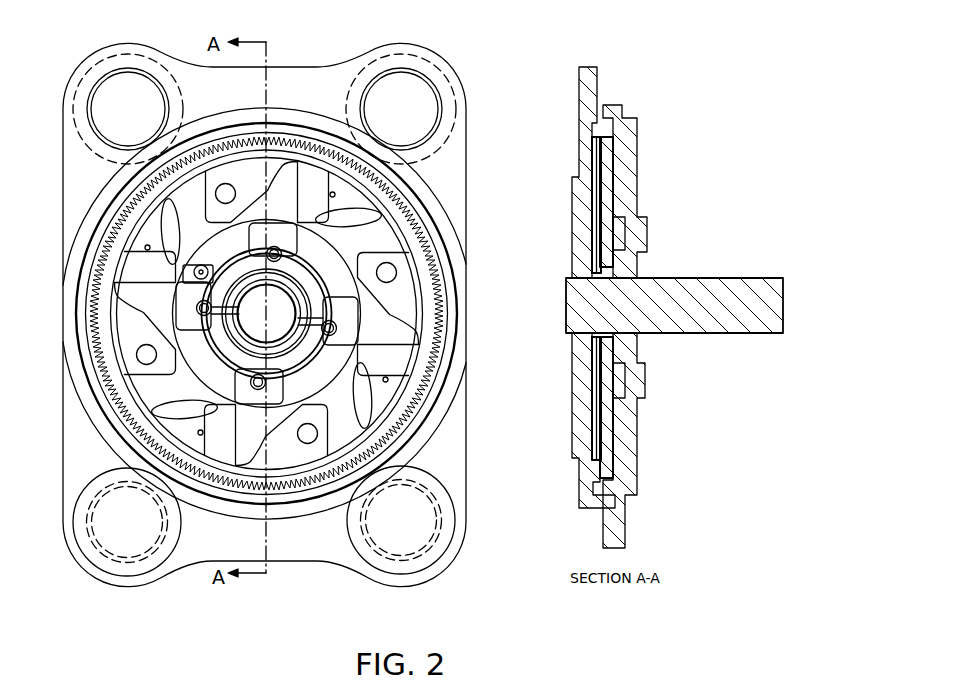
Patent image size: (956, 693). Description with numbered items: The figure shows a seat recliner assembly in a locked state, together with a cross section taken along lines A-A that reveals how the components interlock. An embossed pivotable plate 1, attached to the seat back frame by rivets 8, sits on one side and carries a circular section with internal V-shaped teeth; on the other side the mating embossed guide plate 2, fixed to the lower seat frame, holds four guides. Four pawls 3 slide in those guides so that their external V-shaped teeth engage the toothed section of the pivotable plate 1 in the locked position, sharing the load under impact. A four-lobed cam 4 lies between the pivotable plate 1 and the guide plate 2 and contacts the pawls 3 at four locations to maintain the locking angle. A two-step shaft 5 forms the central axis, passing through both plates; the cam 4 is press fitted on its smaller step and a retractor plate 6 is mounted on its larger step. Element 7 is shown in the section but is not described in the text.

The pivotable plate 1 is at (288, 125).
The guide plate 2 is at (207, 530).
The pawls 3 is at (242, 165).
The cam 4 is at (348, 332).
The shaft 5 is at (282, 308).
The retractor plate 6 is at (362, 202).
The stopper bracket 7 is at (200, 347).
The rivets 8 is at (90, 106).